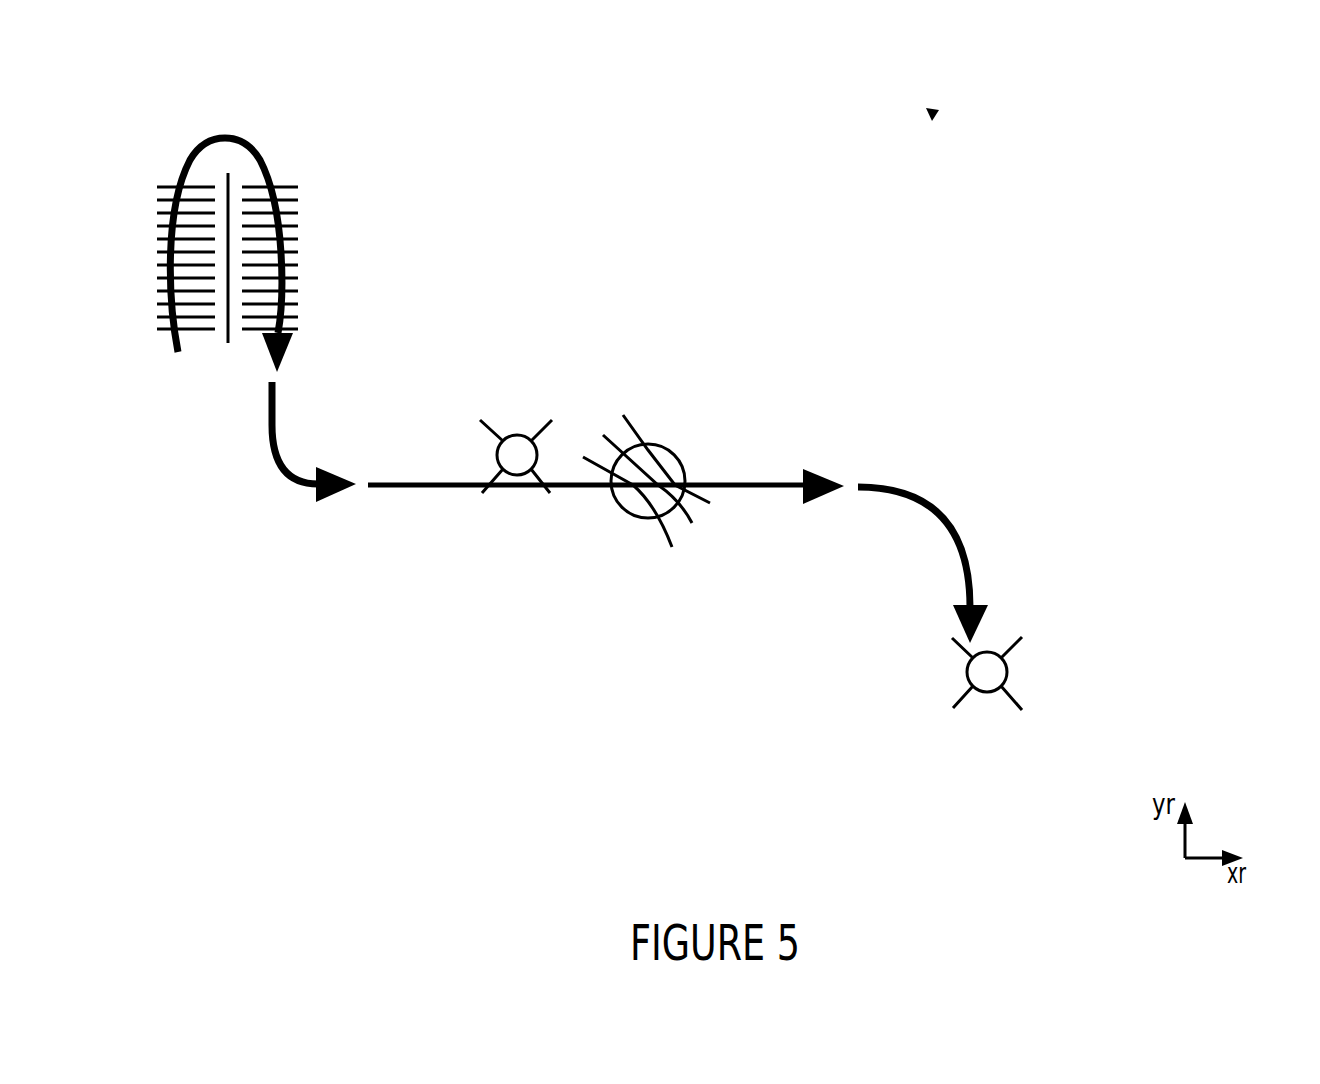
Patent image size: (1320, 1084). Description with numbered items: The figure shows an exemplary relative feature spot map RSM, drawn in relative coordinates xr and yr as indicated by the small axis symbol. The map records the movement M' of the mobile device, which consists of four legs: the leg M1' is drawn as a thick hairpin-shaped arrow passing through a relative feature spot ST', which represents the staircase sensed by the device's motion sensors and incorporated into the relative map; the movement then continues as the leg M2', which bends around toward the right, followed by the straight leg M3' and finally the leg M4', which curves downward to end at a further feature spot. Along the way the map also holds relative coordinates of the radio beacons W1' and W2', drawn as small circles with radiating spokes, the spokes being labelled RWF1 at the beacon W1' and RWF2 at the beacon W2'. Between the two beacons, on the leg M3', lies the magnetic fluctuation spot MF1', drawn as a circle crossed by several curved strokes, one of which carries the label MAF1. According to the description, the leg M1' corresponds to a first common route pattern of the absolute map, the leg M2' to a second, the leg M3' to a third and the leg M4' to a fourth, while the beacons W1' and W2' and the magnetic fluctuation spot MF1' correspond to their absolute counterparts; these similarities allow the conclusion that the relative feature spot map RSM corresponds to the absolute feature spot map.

The leg of the movement M1' is at (242, 225).
The relative feature spot (staircase) ST' is at (265, 258).
The leg of the movement M2' is at (286, 454).
The leg of the movement M3' is at (606, 513).
The first roller wheel frame / spokes RWF1 is at (497, 450).
The radio beacon W1' is at (538, 417).
The magnetic fluctuation spot MF1' is at (673, 446).
The filter mesh / filter area MAF1 is at (708, 503).
The leg of the movement M4' is at (932, 551).
The radio beacon W2' is at (1038, 672).
The second roller wheel frame / spokes RWF2 is at (963, 705).
The relative feature spot map RSM is at (935, 112).